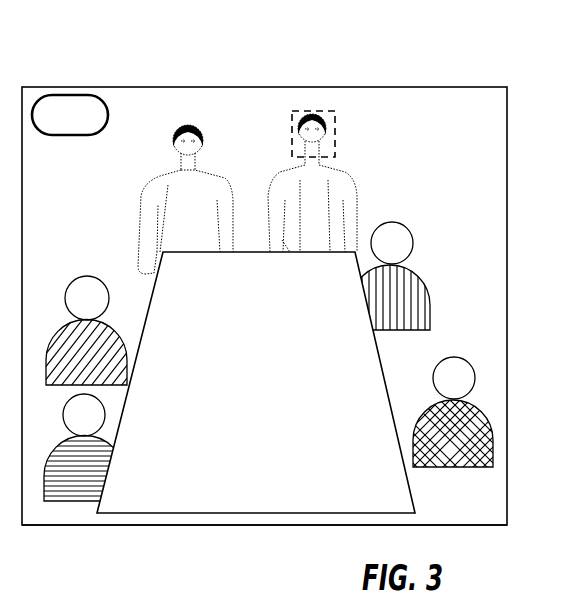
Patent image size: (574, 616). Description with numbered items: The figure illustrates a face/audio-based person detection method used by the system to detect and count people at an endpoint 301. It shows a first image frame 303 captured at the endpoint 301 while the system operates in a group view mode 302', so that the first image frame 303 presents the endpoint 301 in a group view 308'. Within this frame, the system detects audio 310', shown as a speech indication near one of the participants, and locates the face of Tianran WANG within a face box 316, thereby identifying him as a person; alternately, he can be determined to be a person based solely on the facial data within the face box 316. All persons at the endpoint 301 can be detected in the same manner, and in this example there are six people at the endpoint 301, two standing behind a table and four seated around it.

The group view mode 302' is at (275, 263).
The first image frame 303 is at (233, 87).
The endpoint 301 is at (85, 129).
The audio 310' is at (332, 170).
The face box 316 is at (330, 155).
The group view 308' is at (264, 556).